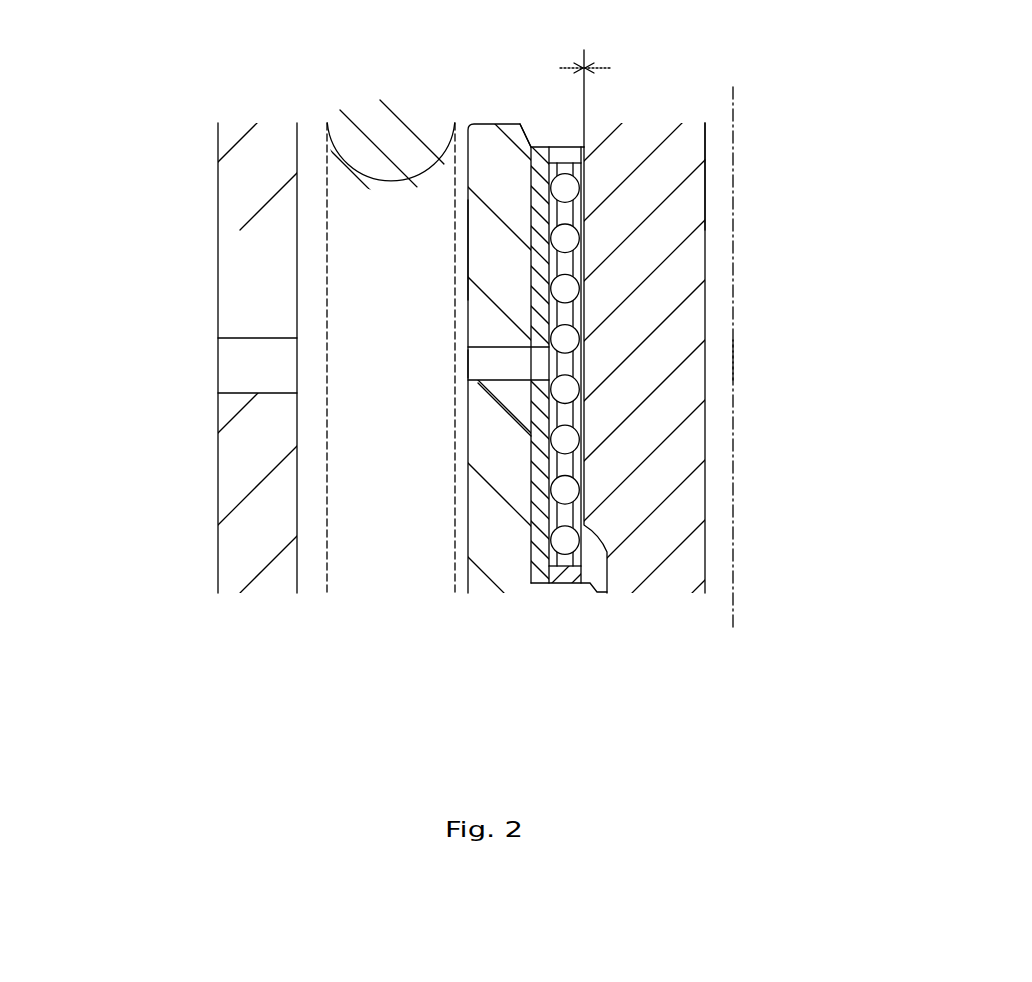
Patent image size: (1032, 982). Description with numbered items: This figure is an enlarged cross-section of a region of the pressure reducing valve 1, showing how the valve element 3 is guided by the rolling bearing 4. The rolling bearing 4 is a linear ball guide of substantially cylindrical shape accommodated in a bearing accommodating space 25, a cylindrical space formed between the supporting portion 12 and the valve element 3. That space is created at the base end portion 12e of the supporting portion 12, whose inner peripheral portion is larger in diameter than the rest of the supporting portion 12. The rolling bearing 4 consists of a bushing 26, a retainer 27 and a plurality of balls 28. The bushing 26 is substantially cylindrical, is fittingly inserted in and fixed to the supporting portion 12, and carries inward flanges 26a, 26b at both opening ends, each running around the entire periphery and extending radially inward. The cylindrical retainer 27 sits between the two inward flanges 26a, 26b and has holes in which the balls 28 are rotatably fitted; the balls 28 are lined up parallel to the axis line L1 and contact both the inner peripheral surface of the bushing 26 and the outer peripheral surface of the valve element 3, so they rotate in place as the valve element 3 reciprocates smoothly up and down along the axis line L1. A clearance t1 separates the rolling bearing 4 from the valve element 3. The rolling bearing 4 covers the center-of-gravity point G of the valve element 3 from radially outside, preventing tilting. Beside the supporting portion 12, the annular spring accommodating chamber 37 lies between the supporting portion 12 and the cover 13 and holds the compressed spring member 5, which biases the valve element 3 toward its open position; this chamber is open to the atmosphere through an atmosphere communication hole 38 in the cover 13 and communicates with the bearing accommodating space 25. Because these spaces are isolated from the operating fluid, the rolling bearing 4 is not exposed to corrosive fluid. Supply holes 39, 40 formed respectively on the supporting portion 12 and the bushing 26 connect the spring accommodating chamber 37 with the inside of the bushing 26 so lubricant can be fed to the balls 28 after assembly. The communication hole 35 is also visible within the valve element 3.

The pressure reducing valve 1 is at (698, 105).
The valve element 3 is at (695, 325).
The rolling bearing 4 is at (542, 190).
The spring member 5 is at (384, 140).
The supporting portion 12 is at (477, 523).
The base end portion 12e is at (477, 243).
The cover 13 is at (230, 292).
The bearing accommodating space 25 is at (538, 136).
The bushing 26 is at (573, 364).
The inward flange 26a is at (556, 165).
The inward flange 26b is at (566, 585).
The retainer 27 is at (575, 307).
The balls 28 is at (575, 282).
The communication hole 35 is at (720, 193).
The spring accommodating chamber 37 is at (396, 361).
The atmosphere communication hole 38 is at (230, 367).
The supply hole 39 is at (478, 365).
The supply hole 40 is at (530, 388).
The clearance t1 is at (605, 68).
The axis line L1 is at (735, 110).
The center-of-gravity point G is at (730, 355).